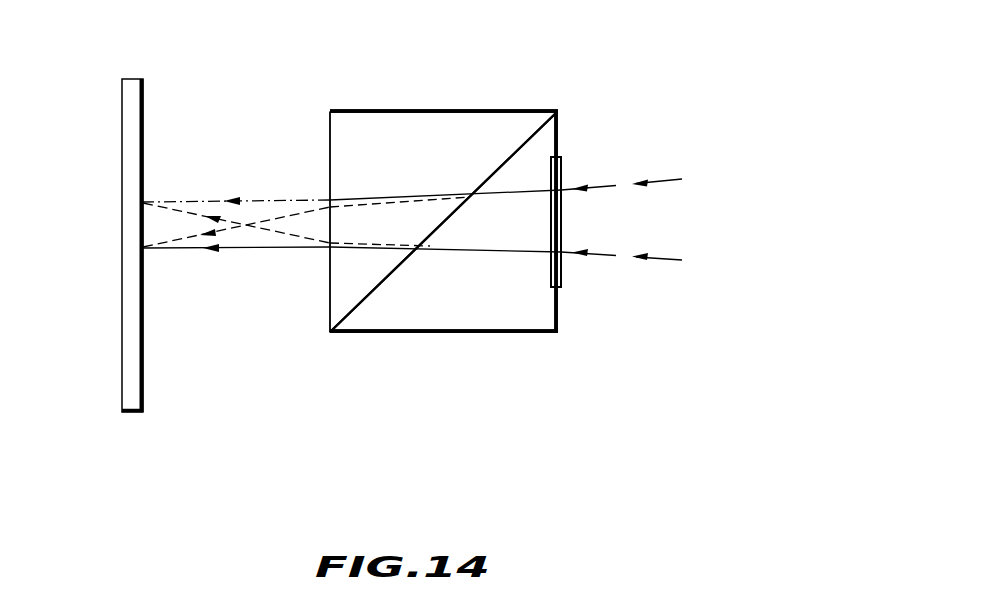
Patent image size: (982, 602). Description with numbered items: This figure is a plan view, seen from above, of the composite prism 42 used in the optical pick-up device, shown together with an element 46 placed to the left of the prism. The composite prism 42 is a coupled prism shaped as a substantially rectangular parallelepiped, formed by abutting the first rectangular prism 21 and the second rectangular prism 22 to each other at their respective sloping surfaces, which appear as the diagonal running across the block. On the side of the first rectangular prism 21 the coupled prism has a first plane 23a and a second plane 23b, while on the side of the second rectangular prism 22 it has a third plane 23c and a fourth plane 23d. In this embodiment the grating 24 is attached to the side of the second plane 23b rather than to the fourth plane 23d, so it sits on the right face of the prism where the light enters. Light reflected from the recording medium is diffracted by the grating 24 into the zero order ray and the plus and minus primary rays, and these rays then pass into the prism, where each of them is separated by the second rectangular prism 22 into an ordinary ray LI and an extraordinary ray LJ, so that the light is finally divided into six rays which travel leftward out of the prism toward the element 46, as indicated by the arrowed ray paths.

The liquid crystal display panel / image plate 46 is at (128, 150).
The composite prism 42 is at (456, 211).
The second rectangular prism 22 is at (445, 118).
The first rectangular prism 21 is at (432, 316).
The first plane 23a is at (520, 334).
The second plane 23b is at (561, 305).
The third plane 23c is at (362, 111).
The fourth plane 23d is at (330, 292).
The grating 24 is at (566, 169).
The ordinary ray LI is at (200, 200).
The extraordinary ray LJ is at (237, 252).